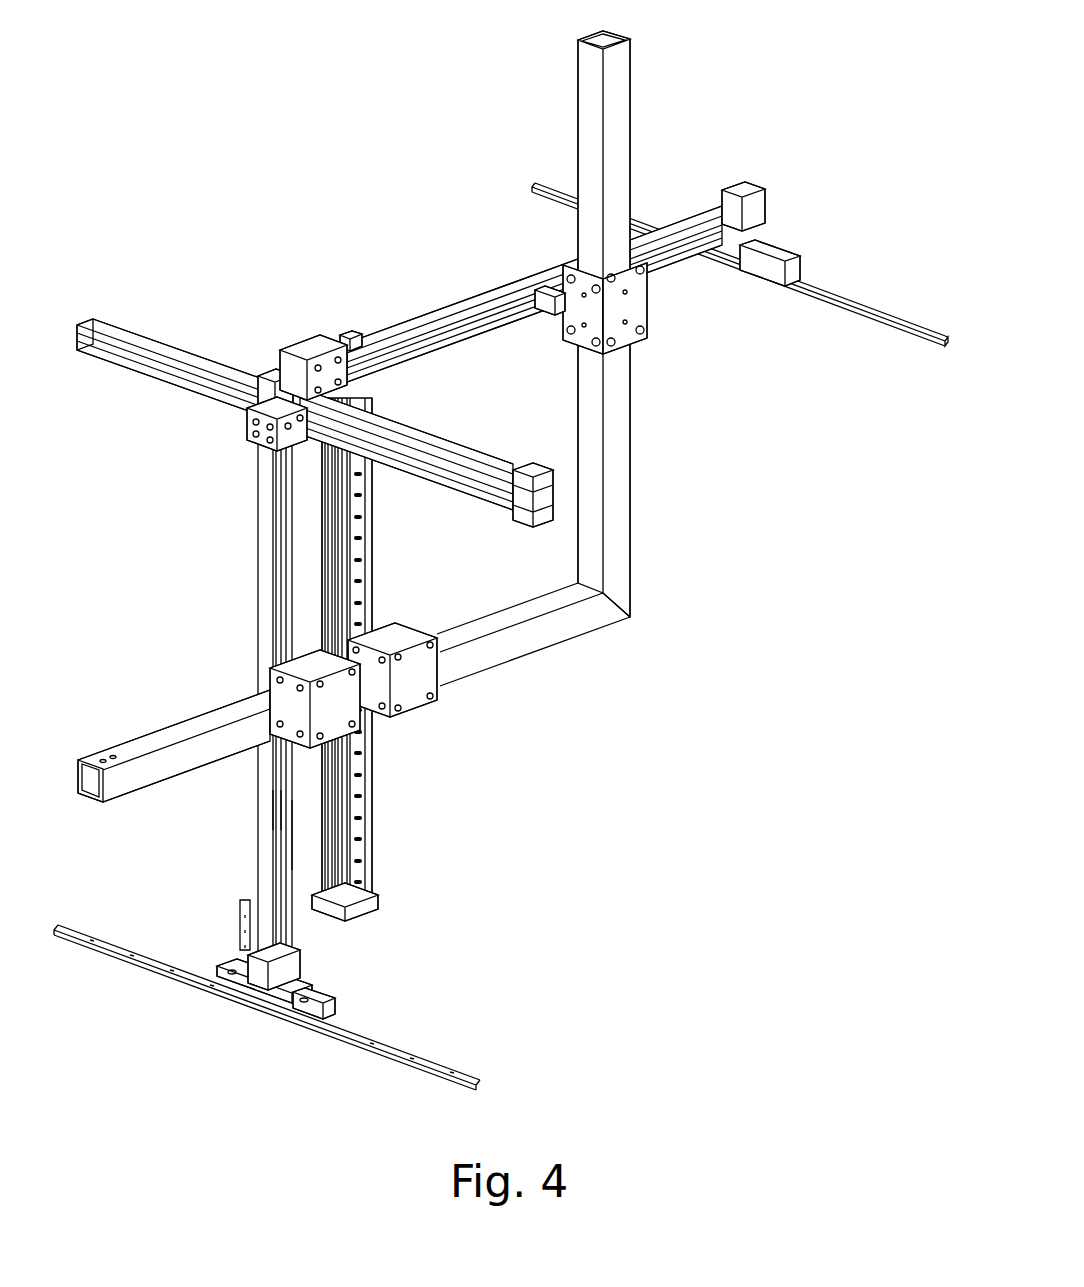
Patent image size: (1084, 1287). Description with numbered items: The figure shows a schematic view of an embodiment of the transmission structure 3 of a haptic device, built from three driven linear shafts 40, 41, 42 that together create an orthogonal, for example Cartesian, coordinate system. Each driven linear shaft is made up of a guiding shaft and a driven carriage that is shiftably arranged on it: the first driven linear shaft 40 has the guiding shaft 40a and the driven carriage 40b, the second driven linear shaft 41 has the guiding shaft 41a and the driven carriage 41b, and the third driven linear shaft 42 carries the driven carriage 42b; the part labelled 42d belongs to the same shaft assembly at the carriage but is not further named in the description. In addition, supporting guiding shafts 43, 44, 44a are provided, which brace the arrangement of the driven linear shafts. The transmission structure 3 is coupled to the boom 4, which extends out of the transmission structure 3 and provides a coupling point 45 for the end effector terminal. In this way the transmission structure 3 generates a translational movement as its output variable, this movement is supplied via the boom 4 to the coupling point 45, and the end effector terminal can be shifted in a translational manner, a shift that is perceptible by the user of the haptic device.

The transmission structure 3 is at (292, 832).
The boom 4 is at (582, 640).
The driven linear shaft 40 is at (122, 328).
The guiding shaft 40a is at (140, 375).
The driven carriage 40b is at (312, 405).
The driven linear shaft 41 is at (258, 553).
The guiding shaft 41a is at (273, 808).
The driven carriage 41b is at (270, 652).
The driven linear shaft 42 is at (438, 305).
The driven carriage 42b is at (543, 292).
The beam end clamp 42d is at (490, 325).
The supporting guiding shaft 43 is at (365, 793).
The supporting guiding shaft 44 is at (858, 318).
The supporting guiding shaft 44a is at (445, 1060).
The coupling point 45 is at (80, 793).